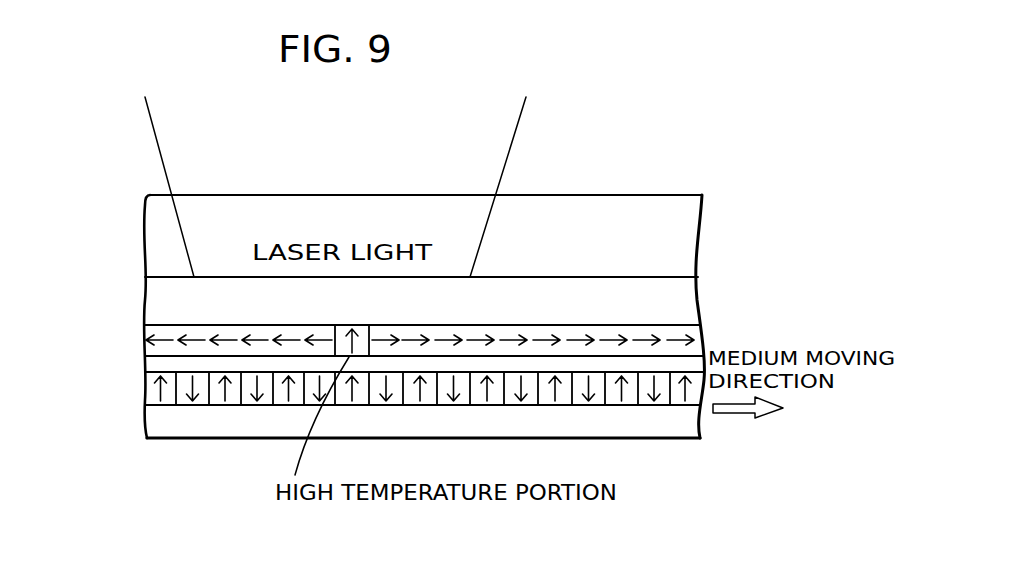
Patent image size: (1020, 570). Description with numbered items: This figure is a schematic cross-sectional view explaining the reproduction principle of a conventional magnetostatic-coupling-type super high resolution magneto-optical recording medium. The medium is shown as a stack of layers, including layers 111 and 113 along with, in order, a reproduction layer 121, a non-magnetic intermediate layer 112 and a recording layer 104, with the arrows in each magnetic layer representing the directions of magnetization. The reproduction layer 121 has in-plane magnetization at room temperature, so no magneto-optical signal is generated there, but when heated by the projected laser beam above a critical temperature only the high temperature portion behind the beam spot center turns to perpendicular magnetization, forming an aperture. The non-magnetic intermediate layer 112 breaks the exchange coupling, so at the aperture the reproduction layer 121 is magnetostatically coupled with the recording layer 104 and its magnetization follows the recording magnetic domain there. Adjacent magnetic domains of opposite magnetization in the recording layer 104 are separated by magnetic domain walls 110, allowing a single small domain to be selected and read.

The transparent substrate 111 is at (153, 304).
The reproduction layer 121 is at (142, 343).
The non-magnetic intermediate layer 112 is at (145, 367).
The recording layer 104 is at (147, 395).
The protective layer 113 is at (157, 420).
The magnetic domain walls 110 is at (237, 407).